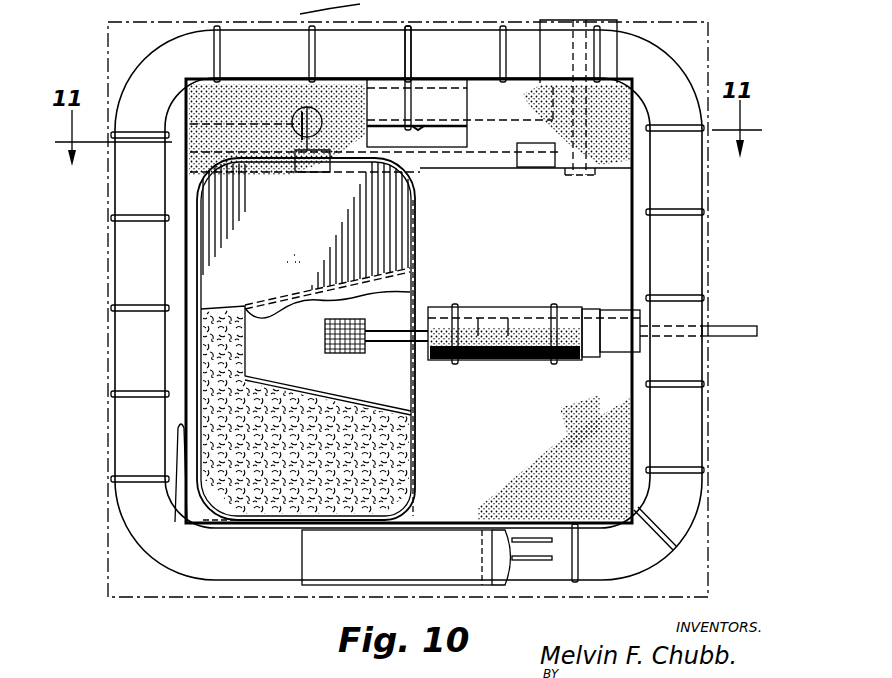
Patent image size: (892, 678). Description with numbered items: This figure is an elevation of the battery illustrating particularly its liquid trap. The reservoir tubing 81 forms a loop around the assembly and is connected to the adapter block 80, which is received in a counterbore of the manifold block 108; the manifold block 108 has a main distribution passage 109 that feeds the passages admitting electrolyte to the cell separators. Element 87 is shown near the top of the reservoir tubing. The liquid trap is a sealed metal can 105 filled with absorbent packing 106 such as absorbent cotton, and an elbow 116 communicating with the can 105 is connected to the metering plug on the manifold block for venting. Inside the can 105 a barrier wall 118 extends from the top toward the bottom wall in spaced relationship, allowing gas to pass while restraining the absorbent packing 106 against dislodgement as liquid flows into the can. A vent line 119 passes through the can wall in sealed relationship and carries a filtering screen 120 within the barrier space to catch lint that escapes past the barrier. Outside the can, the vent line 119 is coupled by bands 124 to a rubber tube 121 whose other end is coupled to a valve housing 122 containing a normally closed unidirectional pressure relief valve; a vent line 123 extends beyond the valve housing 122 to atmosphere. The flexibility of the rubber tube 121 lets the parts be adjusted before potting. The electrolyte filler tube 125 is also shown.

The adapter block 80 is at (612, 22).
The reservoir tubing 81 is at (668, 77).
The inlet connection 87 is at (300, 14).
The sealed metal can 105 is at (422, 223).
The absorbent packing 106 is at (415, 450).
The manifold block 108 is at (636, 108).
The main distribution passage 109 is at (493, 140).
The elbow 116 is at (304, 107).
The barrier wall 118 is at (380, 400).
The vent line 119 is at (392, 342).
The filtering screen 120 is at (325, 338).
The rubber tube 121 is at (497, 318).
The valve housing 122 is at (614, 322).
The vent line 123 is at (735, 332).
The bands 124 is at (453, 305).
The electrolyte filler tube 125 is at (176, 461).